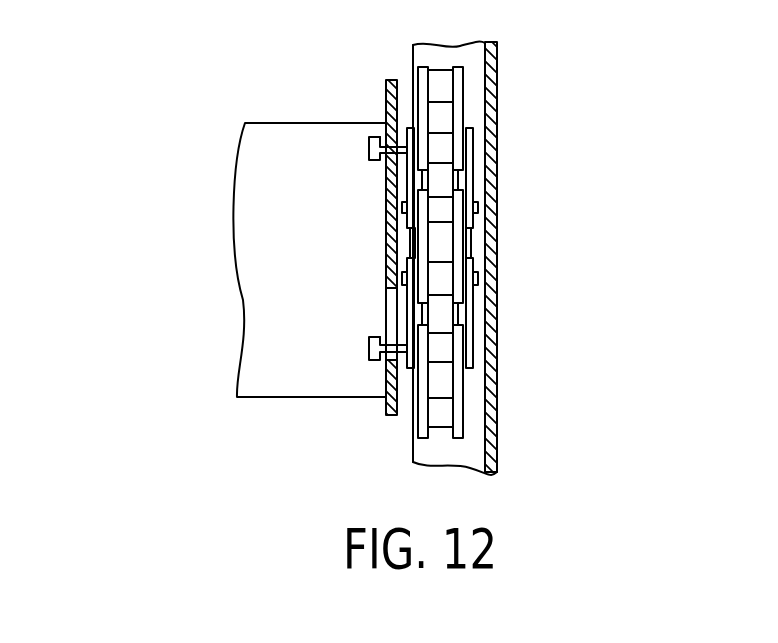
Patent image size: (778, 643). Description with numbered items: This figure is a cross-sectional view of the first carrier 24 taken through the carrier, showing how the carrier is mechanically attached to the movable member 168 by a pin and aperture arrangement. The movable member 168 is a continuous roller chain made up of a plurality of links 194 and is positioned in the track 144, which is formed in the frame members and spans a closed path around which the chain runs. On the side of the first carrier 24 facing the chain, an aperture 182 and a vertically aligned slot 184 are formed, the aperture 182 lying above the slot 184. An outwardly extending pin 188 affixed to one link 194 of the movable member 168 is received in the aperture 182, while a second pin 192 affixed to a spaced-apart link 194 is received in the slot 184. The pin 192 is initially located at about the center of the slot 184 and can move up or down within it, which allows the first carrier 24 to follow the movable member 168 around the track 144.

The first carrier 24 is at (122, 104).
The track 144 is at (498, 78).
The link 194 is at (493, 137).
The movable member 168 is at (495, 172).
The aperture 182 is at (386, 170).
The slot 184 is at (388, 308).
The pin 188 is at (386, 112).
The pin 192 is at (386, 365).